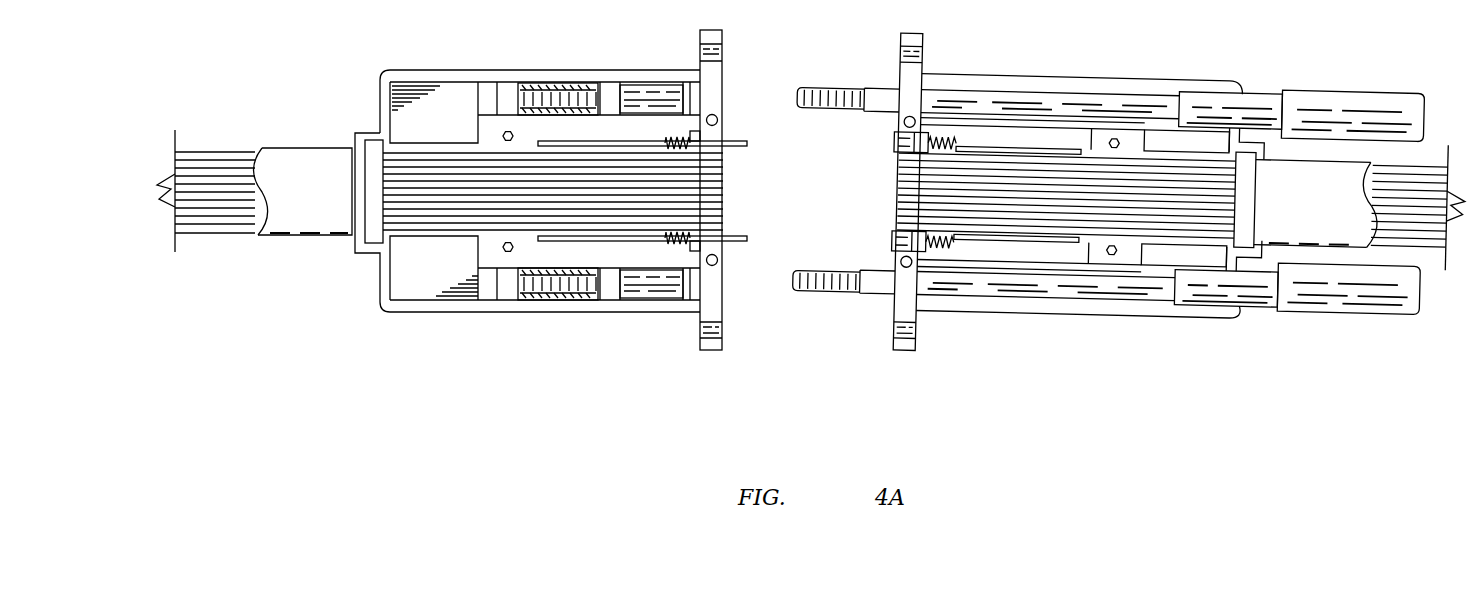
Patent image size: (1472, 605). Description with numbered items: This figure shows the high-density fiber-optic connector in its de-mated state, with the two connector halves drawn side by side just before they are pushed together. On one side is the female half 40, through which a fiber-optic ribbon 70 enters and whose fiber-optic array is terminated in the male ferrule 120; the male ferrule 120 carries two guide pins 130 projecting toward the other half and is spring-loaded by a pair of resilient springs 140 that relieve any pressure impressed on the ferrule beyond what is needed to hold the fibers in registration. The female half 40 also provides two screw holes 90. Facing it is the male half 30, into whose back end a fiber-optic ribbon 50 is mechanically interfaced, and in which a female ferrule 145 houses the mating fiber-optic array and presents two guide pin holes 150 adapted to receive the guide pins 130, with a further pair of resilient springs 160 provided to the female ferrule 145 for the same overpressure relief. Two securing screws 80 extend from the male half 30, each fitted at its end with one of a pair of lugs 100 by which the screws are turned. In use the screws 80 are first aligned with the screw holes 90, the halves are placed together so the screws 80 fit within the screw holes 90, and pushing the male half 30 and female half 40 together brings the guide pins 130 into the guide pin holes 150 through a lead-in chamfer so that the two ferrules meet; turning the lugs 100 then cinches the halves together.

The male half 30 is at (1240, 318).
The female half 40 is at (470, 312).
The fiber-optic ribbon 50 is at (1365, 160).
The fiber-optic ribbon 70 is at (305, 237).
The securing screws 80 is at (828, 90).
The screw holes 90 is at (722, 47).
The lugs 100 is at (1350, 92).
The male ferrule 120 is at (725, 202).
The guide pins 130 is at (747, 144).
The resilient springs 140 is at (666, 140).
The female ferrule 145 is at (893, 200).
The guide pin holes 150 is at (893, 145).
The resilient springs 160 is at (955, 140).